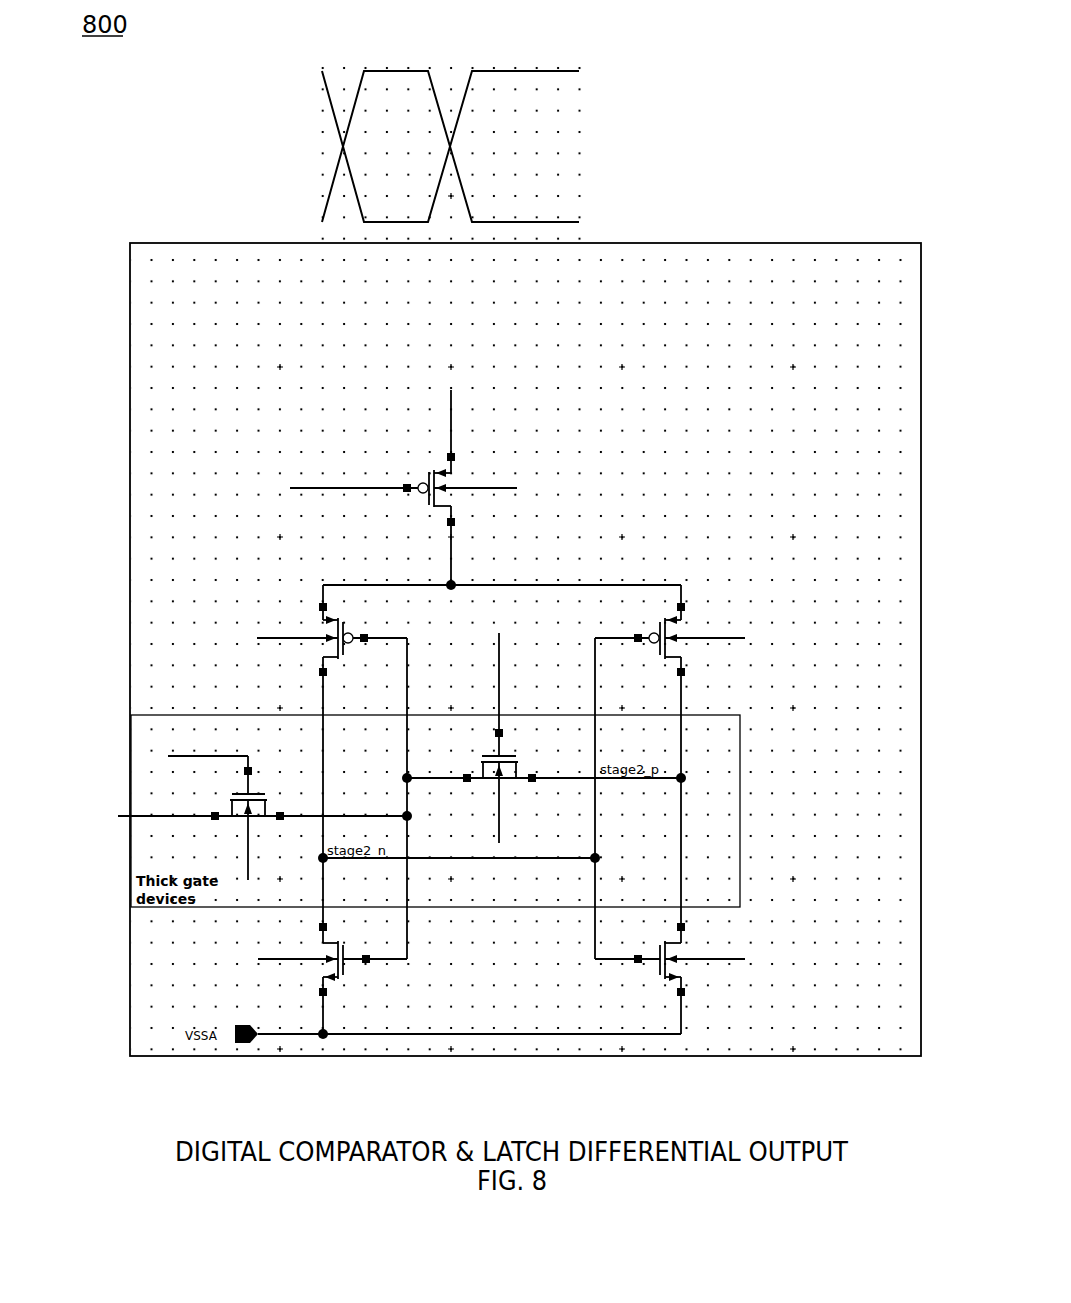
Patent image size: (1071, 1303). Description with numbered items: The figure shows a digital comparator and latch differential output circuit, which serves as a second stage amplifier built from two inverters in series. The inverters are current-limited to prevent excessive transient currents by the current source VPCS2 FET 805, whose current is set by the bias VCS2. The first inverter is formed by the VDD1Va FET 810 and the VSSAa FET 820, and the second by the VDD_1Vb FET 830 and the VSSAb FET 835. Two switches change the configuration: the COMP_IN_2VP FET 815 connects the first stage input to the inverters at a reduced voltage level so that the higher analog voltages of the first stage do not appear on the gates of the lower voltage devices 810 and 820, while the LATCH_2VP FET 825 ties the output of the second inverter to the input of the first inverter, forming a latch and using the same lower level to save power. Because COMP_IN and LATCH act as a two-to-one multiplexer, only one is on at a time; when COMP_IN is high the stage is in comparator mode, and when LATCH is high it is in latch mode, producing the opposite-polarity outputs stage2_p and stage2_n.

The VPCS2 FET 805 is at (417, 477).
The VDD1Va FET 810 is at (320, 628).
The COMP_IN_2VP FET 815 is at (253, 787).
The VSSAa FET 820 is at (350, 970).
The LATCH_2VP FET 825 is at (509, 745).
The VDD_1Vb FET 830 is at (684, 627).
The VSSAb FET 835 is at (688, 937).